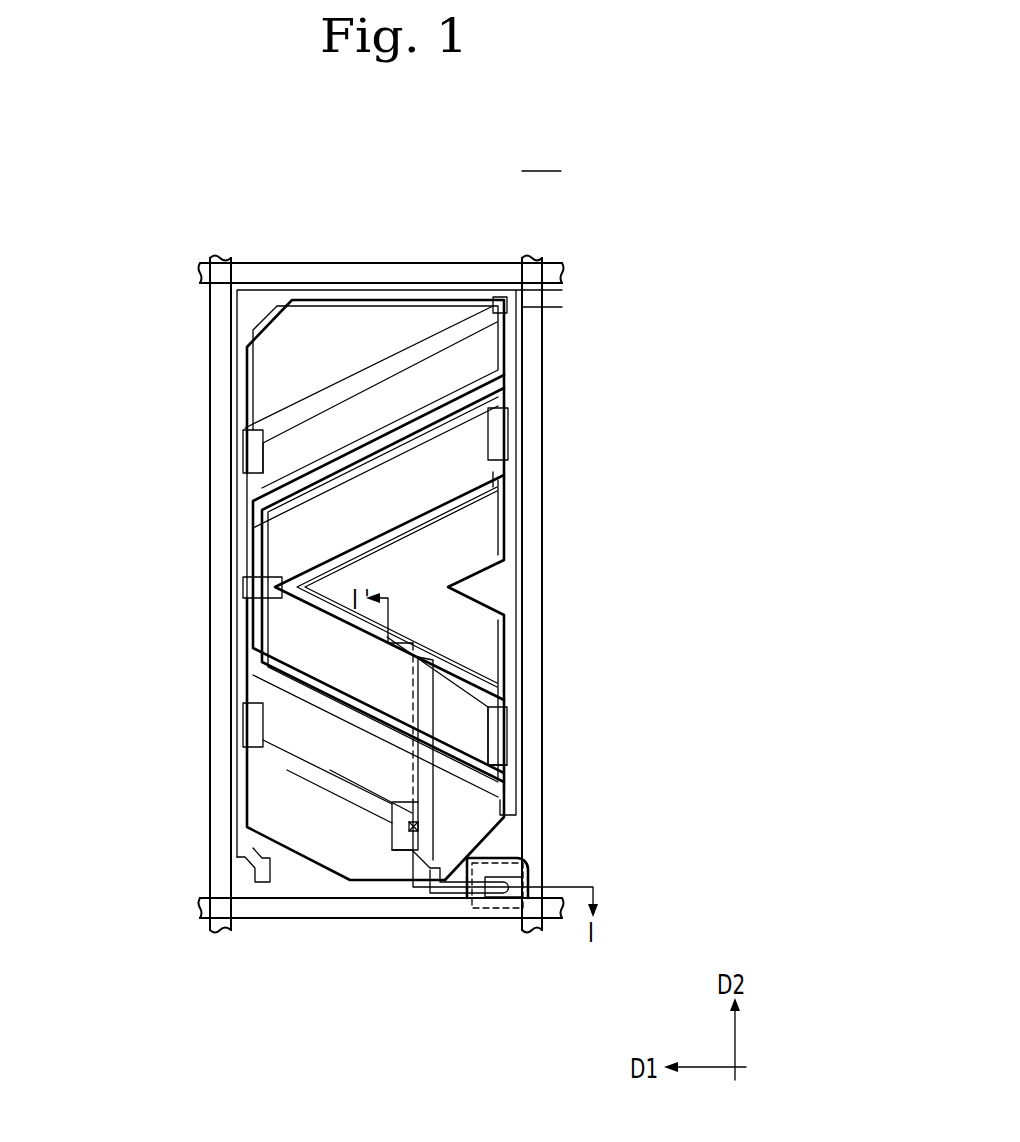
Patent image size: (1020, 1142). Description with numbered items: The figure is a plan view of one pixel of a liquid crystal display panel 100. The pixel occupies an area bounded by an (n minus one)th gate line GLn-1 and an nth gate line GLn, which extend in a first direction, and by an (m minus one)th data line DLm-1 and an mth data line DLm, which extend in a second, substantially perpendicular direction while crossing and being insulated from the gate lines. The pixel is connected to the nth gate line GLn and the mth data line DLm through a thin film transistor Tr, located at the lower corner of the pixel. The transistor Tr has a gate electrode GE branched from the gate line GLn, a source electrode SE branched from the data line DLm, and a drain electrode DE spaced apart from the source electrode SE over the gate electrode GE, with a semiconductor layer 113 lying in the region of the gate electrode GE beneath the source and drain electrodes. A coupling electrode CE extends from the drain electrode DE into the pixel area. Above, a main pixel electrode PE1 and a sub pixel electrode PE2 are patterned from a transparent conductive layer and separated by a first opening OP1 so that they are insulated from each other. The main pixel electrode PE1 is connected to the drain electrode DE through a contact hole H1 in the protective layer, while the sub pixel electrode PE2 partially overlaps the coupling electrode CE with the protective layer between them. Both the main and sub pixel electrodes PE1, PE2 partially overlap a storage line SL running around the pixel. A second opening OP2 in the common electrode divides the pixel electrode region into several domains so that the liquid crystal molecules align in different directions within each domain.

The liquid crystal display panel 100 is at (541, 156).
The (n-1)th gate line GLn-1 is at (383, 262).
The nth gate line GLn is at (246, 920).
The (m-1)th data line DLm-1 is at (208, 326).
The mth data line DLm is at (545, 368).
The storage line SL is at (235, 497).
The sub pixel electrode PE2 is at (506, 650).
The main pixel electrode PE1 is at (308, 862).
The coupling electrode CE is at (500, 480).
The first opening OP1 is at (377, 458).
The second opening OP2 is at (462, 680).
The contact hole H1 is at (404, 826).
The semiconductor layer 113 is at (472, 908).
The gate electrode GE is at (565, 880).
The source electrode SE is at (492, 905).
The drain electrode DE is at (450, 897).
The thin film transistor Tr is at (465, 944).